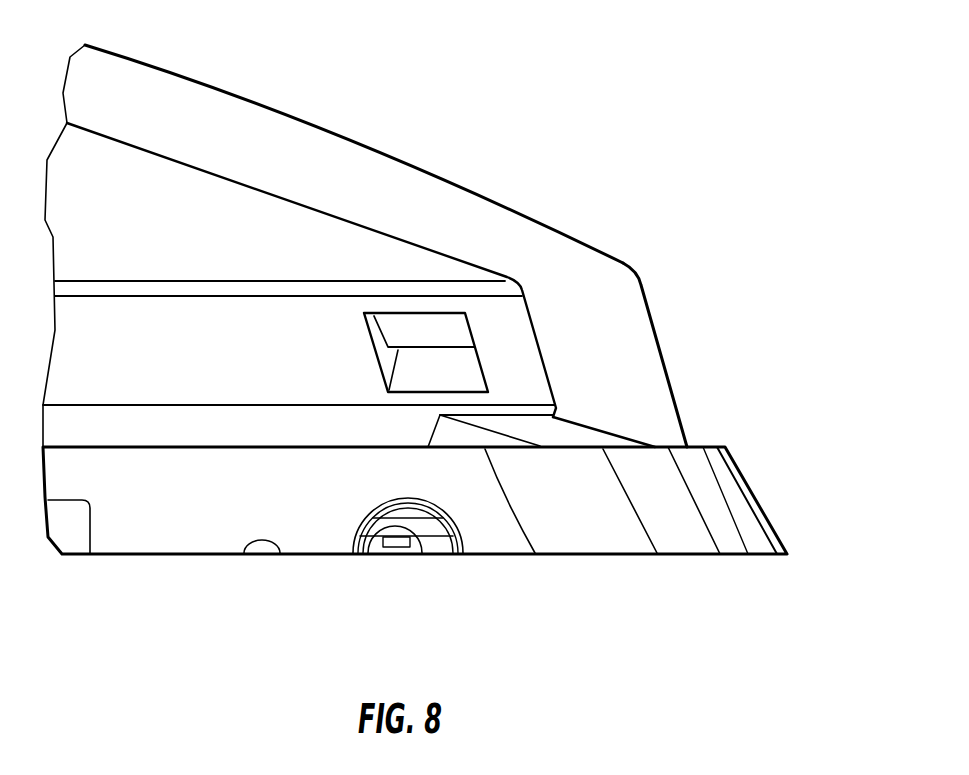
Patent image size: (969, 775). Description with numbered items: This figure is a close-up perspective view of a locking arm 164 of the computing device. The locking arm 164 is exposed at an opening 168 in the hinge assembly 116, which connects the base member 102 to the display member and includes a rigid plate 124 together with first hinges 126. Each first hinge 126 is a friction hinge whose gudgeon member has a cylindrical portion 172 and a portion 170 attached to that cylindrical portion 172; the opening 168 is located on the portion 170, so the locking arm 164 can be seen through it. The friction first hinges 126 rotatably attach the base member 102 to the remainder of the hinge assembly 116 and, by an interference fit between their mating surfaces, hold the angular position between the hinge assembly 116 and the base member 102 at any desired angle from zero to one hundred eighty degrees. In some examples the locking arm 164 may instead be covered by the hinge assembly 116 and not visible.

The base member 102 is at (745, 515).
The hinge assembly 116 is at (600, 222).
The rigid plate 124 is at (467, 187).
The first hinge 126 is at (418, 437).
The locking arm 164 is at (453, 328).
The opening 168 is at (475, 367).
The portion 170 is at (640, 338).
The cylindrical portion 172 is at (382, 437).